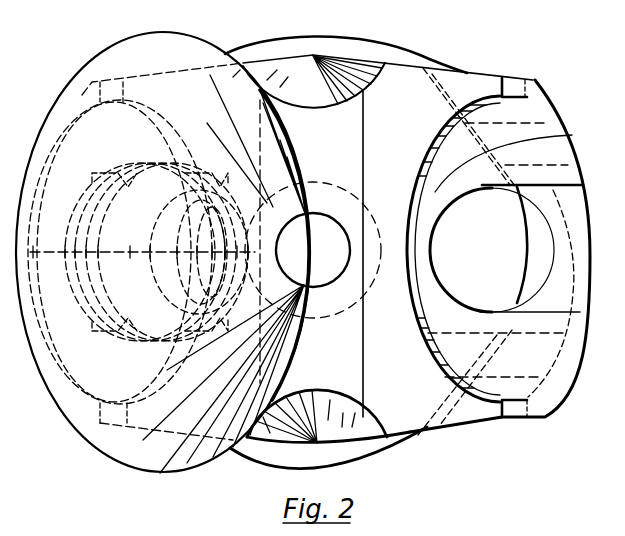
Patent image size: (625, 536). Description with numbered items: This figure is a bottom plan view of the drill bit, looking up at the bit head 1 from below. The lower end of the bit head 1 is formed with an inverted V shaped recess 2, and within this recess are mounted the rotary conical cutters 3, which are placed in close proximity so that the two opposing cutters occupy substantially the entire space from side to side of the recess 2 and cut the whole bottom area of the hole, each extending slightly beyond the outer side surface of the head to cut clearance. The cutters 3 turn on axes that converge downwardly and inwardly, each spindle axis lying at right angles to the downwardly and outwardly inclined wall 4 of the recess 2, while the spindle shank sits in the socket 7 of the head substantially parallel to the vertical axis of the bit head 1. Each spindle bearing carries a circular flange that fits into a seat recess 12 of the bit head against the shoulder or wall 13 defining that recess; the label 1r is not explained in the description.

The bit head 1 is at (467, 72).
The casing rim flange 1r is at (357, 55).
The inverted V shaped recess 2 is at (352, 125).
The rotary conical cutters 3 is at (68, 425).
The downwardly and outwardly inclined wall 4 is at (410, 355).
The socket 7 is at (509, 245).
The seat recess 12 is at (560, 140).
The shoulder or wall 13 is at (415, 247).